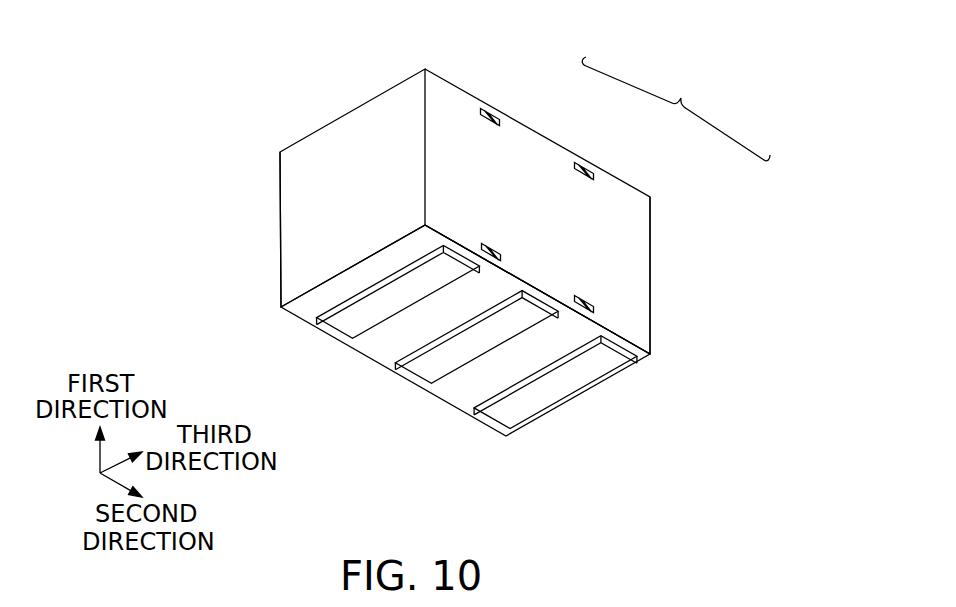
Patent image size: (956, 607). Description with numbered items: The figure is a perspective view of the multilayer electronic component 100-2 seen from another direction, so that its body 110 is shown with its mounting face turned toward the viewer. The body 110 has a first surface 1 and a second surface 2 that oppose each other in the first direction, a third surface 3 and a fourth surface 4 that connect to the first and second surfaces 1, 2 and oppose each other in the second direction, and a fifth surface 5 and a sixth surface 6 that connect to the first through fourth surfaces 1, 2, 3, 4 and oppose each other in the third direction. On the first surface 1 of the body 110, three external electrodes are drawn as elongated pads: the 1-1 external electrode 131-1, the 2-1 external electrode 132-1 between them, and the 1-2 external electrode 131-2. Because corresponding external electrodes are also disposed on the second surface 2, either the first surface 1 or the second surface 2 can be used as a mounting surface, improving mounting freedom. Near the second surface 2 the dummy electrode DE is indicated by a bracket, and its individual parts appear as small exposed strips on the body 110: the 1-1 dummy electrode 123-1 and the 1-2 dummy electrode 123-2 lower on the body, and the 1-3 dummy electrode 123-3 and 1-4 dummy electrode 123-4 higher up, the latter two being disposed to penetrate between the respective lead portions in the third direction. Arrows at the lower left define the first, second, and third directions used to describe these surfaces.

The multilayer electronic component 100-2 is at (283, 32).
The first surface 1 is at (296, 324).
The second surface 2 is at (460, 75).
The third surface 3 is at (341, 140).
The fourth surface 4 is at (665, 320).
The fifth surface 5 is at (267, 265).
The sixth surface 6 is at (653, 279).
The body 110 is at (293, 213).
The 1-1 dummy electrode 123-1 is at (503, 250).
The 1-2 dummy electrode 123-2 is at (596, 307).
The 1-3 dummy electrode 123-3 is at (500, 113).
The 1-4 dummy electrode 123-4 is at (600, 165).
The 1-1 external electrode 131-1 is at (353, 325).
The 2-1 external electrode 132-1 is at (432, 372).
The 1-2 external electrode 131-2 is at (508, 416).
The dummy electrode DE is at (676, 109).